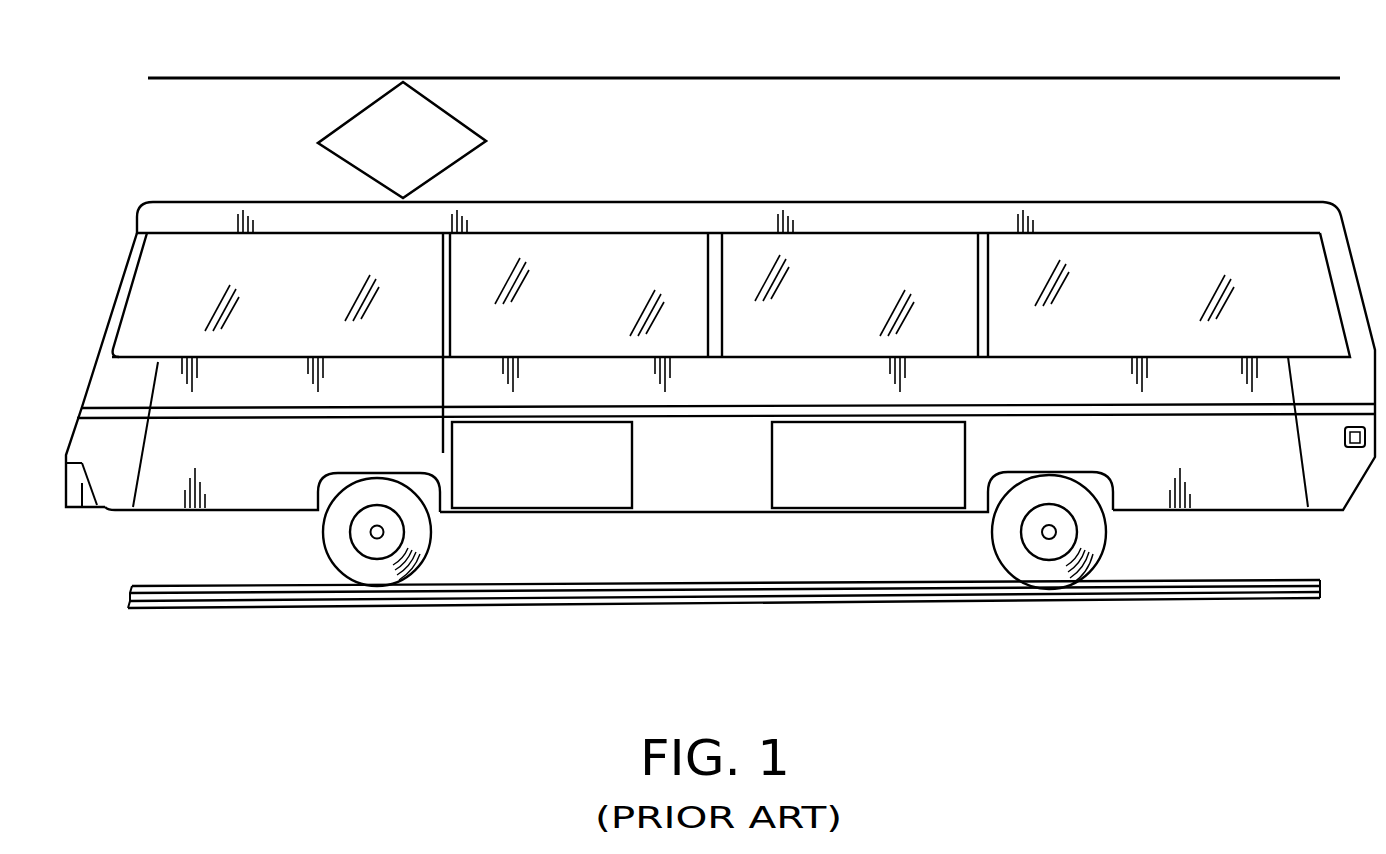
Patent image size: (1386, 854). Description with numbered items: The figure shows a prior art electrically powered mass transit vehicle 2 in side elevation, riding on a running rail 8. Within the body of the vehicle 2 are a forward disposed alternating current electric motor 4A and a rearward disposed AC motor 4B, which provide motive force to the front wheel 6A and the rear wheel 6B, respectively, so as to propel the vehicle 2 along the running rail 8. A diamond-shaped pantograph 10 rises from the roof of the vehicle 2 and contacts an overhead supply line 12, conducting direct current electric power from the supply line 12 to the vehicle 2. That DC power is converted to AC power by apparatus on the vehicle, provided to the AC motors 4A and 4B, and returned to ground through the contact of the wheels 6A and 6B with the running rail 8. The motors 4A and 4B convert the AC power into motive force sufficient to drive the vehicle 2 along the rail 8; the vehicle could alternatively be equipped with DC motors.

The electrically powered mass transit vehicle 2 is at (720, 350).
The forward disposed alternating current electric motor 4A is at (485, 509).
The rearward disposed AC motor 4B is at (923, 509).
The front wheel 6A is at (352, 568).
The rear wheel 6B is at (1040, 567).
The running rail 8 is at (712, 593).
The pantograph 10 is at (466, 152).
The supply line 12 is at (273, 77).